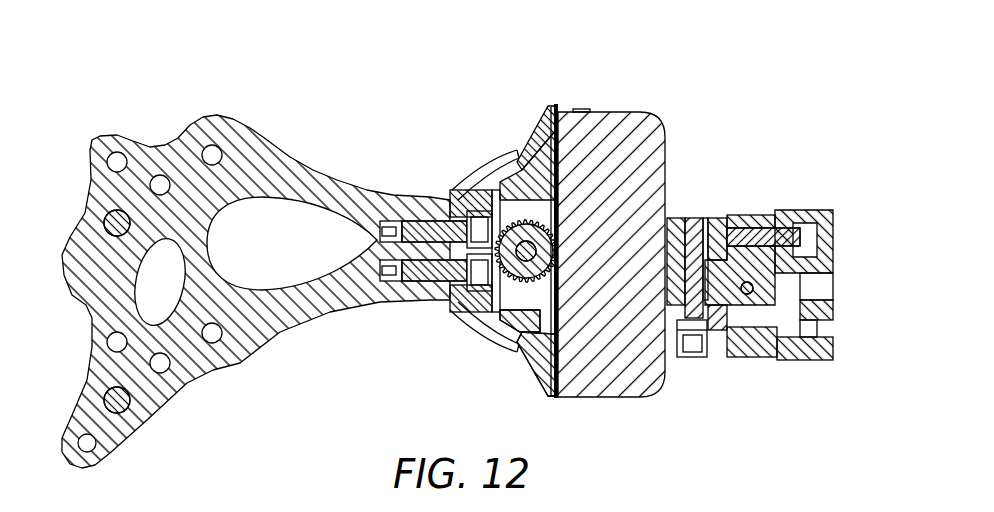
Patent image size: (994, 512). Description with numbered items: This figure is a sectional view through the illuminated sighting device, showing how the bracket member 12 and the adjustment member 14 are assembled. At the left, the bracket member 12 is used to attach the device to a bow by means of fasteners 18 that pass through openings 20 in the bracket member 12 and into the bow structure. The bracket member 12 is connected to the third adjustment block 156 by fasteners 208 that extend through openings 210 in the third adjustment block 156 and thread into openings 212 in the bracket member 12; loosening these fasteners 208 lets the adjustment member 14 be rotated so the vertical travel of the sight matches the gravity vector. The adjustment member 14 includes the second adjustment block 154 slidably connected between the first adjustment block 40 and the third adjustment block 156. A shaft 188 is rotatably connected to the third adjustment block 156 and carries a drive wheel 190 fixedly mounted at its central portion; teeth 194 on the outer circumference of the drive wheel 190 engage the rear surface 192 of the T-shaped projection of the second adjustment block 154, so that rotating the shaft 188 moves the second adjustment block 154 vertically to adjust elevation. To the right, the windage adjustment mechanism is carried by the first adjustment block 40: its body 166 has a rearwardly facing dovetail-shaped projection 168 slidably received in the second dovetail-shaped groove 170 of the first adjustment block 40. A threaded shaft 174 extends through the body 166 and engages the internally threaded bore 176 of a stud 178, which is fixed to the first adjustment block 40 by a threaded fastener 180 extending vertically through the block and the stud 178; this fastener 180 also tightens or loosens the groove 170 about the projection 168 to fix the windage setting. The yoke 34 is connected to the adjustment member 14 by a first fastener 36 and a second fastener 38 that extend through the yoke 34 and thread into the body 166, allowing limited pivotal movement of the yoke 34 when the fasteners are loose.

The bracket member 12 is at (290, 152).
The adjustment member 14 is at (557, 97).
The fasteners 18 is at (108, 213).
The openings 20 is at (210, 150).
The yoke 34 is at (797, 212).
The first fastener 36 is at (817, 340).
The second fastener 38 is at (812, 233).
The first adjustment block 40 is at (712, 225).
The second adjustment block 154 is at (636, 115).
The third adjustment block 156 is at (545, 138).
The body 166 is at (750, 257).
The dovetail-shaped projection 168 is at (713, 258).
The second dovetail-shaped groove 170 is at (718, 330).
The shaft 174 is at (800, 287).
The internally threaded bore 176 is at (817, 300).
The stud 178 is at (749, 294).
The threaded fastener 180 is at (680, 357).
The shaft 188 is at (510, 340).
The drive wheel 190 is at (525, 285).
The rear surface 192 is at (528, 142).
The teeth 194 is at (487, 183).
The fasteners 208 is at (420, 222).
The openings 210 is at (456, 190).
The openings 212 is at (377, 229).